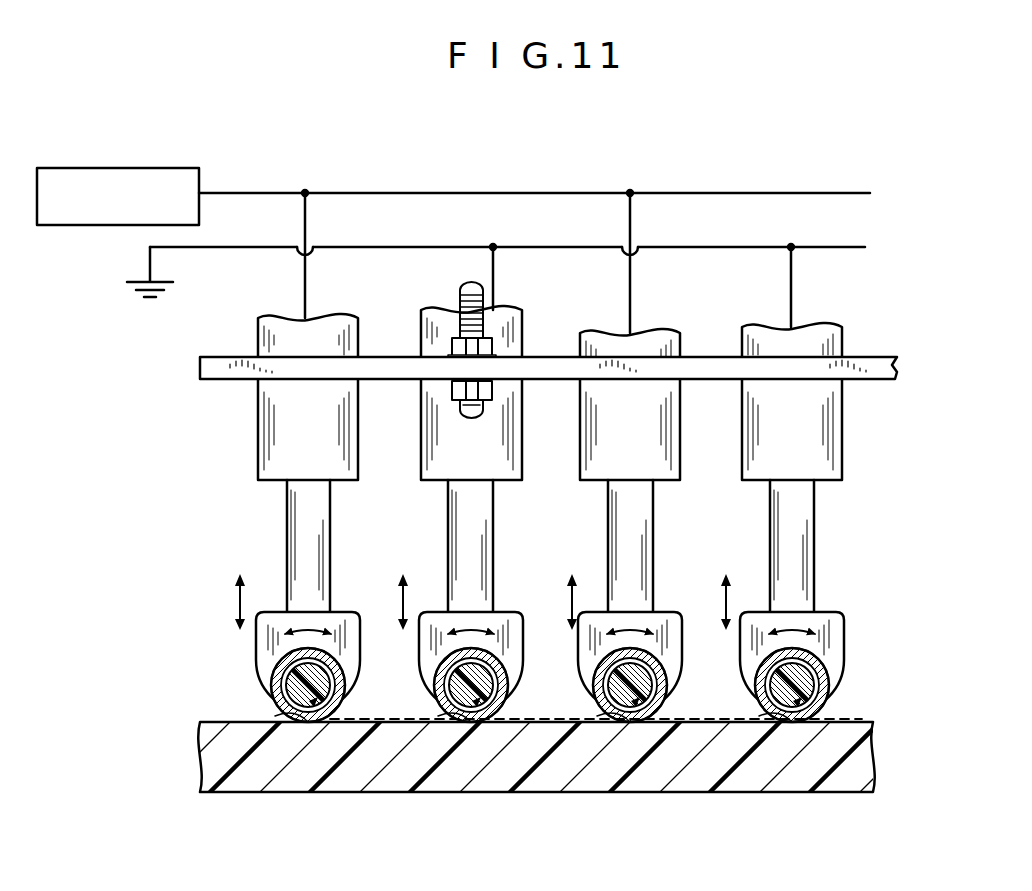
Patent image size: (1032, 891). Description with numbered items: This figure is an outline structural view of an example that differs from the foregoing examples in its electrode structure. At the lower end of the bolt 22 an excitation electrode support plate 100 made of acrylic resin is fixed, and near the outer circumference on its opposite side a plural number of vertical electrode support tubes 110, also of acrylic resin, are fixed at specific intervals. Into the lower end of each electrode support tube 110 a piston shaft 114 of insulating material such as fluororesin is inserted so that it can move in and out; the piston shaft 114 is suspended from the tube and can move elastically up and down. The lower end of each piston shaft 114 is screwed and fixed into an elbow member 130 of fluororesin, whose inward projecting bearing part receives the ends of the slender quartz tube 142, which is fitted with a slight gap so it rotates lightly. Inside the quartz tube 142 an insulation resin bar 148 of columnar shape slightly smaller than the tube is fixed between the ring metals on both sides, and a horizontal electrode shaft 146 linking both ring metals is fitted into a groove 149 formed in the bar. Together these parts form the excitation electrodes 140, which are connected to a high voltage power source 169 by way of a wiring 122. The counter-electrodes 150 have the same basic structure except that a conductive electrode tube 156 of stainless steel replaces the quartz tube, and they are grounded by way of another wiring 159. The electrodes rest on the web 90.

The high voltage power source 169 is at (118, 196).
The wiring 122 is at (243, 191).
The bolt 22 is at (457, 298).
The wiring 159 is at (236, 252).
The excitation electrode support plate 100 is at (867, 362).
The electrode support tube 110 is at (814, 437).
The piston shaft 114 is at (795, 523).
The elbow member 130 is at (840, 616).
The excitation electrode 140 is at (539, 706).
The quartz tube 142 is at (280, 666).
The insulation resin bar 148 is at (822, 653).
The electrode shaft 146 is at (312, 697).
The groove 149 is at (350, 718).
The counter-electrode 150 is at (842, 688).
The electrode tube 156 is at (548, 725).
The web 90 is at (585, 778).